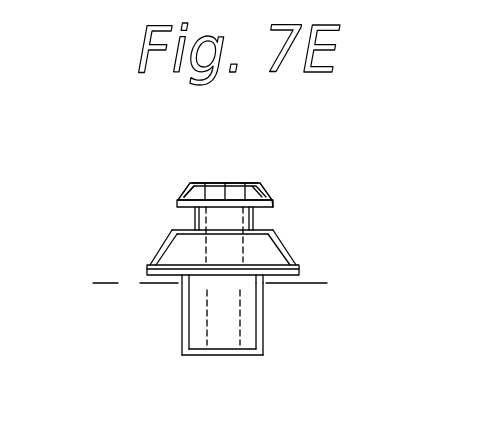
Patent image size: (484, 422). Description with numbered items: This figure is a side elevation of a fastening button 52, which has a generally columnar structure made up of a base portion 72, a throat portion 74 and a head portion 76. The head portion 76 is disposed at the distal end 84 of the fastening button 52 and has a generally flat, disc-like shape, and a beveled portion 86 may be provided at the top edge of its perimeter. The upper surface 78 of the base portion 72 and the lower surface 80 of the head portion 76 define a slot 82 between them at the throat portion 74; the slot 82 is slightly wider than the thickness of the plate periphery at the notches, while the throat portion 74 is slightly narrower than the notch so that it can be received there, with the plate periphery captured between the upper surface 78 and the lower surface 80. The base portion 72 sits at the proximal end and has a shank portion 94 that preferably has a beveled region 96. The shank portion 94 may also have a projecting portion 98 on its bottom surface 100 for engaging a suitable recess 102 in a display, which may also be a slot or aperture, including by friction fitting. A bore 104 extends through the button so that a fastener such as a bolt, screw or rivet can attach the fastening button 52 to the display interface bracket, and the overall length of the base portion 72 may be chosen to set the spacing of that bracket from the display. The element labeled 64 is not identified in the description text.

The fastening button 52 is at (326, 172).
The throat portion 74 is at (223, 182).
The head portion 76 is at (238, 182).
The distal end 84 is at (189, 183).
The beveled portion 86 is at (177, 195).
The slot 82 is at (176, 204).
The lower surface 80 is at (272, 217).
The upper surface 78 is at (192, 227).
The bore 104 is at (285, 235).
The base portion 72 is at (292, 255).
The beveled region 96 is at (164, 245).
The shank portion 94 is at (148, 265).
The projecting portion 98 is at (182, 357).
The recess 102 is at (263, 356).
The bottom surface 100 is at (297, 284).
The panel 64 is at (248, 390).